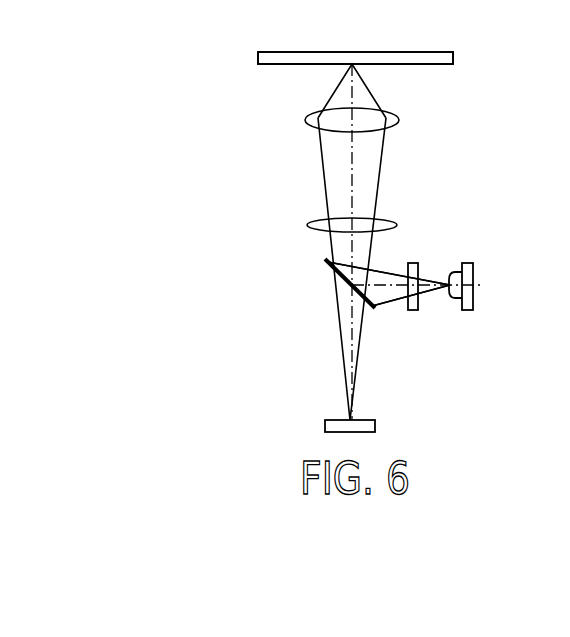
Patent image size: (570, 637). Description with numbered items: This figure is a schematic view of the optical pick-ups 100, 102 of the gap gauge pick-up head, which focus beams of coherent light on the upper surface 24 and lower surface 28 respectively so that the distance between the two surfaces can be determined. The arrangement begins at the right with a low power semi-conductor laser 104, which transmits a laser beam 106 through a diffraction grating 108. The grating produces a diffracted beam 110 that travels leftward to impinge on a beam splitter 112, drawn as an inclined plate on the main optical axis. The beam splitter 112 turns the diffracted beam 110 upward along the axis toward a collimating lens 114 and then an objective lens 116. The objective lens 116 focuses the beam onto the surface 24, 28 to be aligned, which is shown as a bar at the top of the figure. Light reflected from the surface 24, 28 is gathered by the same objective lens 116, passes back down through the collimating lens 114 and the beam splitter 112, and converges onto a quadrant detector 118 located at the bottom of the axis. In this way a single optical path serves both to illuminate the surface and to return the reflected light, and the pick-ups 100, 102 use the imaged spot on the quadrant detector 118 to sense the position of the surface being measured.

The upper surface 24 is at (455, 57).
The lower surface 28 is at (355, 58).
The pick-up 100 is at (236, 169).
The pick-up 102 is at (236, 169).
The low power semi-conductor laser 104 is at (474, 298).
The laser beam 106 is at (433, 280).
The diffraction grating 108 is at (413, 311).
The diffracted beam 110 is at (385, 272).
The beam splitter 112 is at (312, 281).
The collimating lens 114 is at (392, 220).
The objective lens 116 is at (399, 115).
The quadrant detector 118 is at (325, 426).